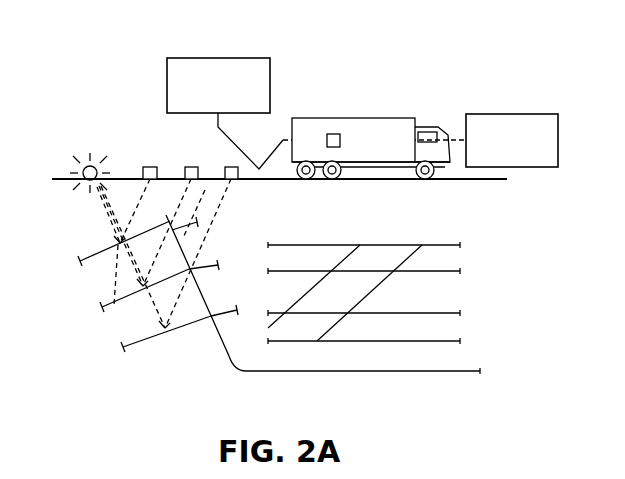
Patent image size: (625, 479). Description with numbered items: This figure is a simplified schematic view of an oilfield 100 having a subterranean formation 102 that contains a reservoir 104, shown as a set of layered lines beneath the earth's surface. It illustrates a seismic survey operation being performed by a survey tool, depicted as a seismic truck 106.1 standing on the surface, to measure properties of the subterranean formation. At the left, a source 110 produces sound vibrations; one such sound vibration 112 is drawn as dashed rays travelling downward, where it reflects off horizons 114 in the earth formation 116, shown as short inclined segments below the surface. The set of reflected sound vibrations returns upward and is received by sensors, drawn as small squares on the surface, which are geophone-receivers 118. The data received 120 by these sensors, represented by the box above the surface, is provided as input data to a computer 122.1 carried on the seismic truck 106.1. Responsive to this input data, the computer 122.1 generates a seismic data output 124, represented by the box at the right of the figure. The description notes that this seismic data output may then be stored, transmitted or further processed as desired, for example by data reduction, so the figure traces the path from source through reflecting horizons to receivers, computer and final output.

The oilfield 100 is at (476, 81).
The subterranean formation 102 is at (444, 234).
The reservoir 104 is at (426, 302).
The seismic truck 106.1 is at (395, 118).
The source 110 is at (81, 167).
The sound vibration 112 is at (118, 206).
The horizons 114 is at (80, 259).
The earth formation 116 is at (222, 340).
The geophone-receivers 118 is at (228, 167).
The data received 120 is at (192, 58).
The computer 122.1 is at (333, 134).
The seismic data output 124 is at (530, 114).